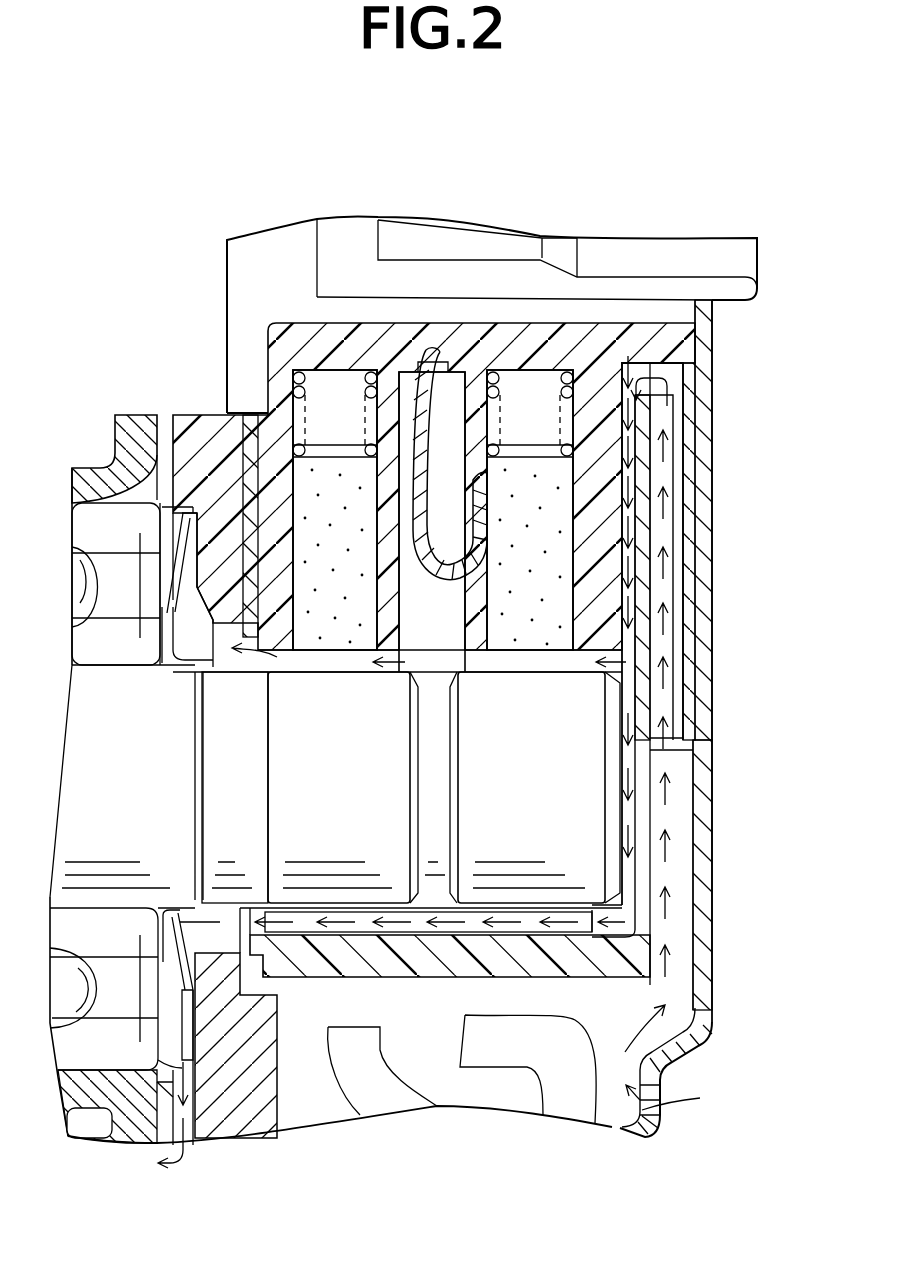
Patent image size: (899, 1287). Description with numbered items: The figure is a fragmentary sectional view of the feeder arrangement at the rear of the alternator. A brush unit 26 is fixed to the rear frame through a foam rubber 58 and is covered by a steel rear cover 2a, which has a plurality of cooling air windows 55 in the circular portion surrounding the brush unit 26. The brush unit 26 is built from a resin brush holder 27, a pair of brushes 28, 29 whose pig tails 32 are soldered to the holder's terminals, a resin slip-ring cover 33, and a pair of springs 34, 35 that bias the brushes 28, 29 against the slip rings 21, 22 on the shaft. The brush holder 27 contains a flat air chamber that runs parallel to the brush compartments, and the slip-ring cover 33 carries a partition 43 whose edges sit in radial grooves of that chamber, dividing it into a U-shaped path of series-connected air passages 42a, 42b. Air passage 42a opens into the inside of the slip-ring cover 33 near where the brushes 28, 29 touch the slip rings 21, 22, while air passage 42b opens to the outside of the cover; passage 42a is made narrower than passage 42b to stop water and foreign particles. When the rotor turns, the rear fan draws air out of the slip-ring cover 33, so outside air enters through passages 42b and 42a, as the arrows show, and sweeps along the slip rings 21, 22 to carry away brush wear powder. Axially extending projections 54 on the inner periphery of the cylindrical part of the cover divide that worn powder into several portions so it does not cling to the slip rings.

The rear cover 2a is at (712, 632).
The brush unit 26 is at (277, 310).
The brush holder 27 is at (378, 345).
The brush 28 is at (335, 465).
The brush 29 is at (515, 460).
The pig tails 32 is at (431, 345).
The spring 34 is at (370, 372).
The spring 35 is at (548, 397).
The air passage 42a is at (622, 497).
The air passage 42b is at (673, 473).
The partition 43 is at (652, 758).
The foam rubber 58 is at (180, 413).
The slip ring 22 is at (303, 888).
The axially extending projections 54 is at (420, 920).
The slip-ring cover 33 is at (383, 967).
The slip ring 21 is at (535, 885).
The cooling air windows 55 is at (658, 1108).